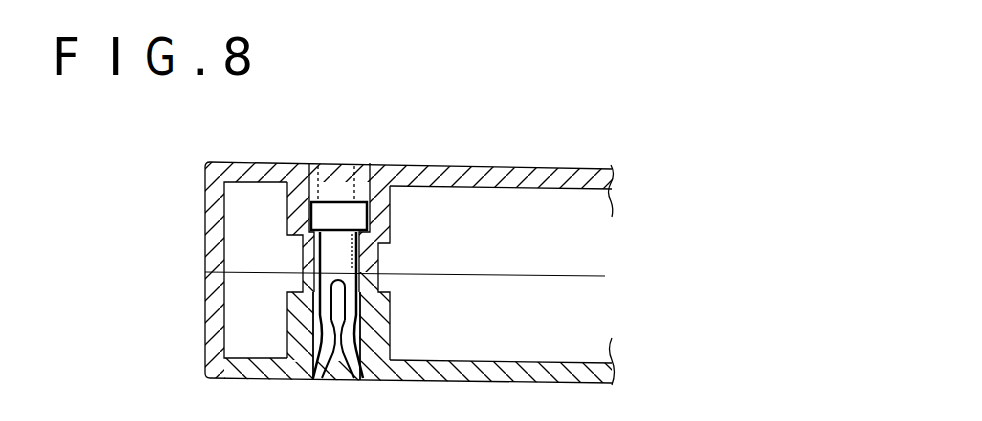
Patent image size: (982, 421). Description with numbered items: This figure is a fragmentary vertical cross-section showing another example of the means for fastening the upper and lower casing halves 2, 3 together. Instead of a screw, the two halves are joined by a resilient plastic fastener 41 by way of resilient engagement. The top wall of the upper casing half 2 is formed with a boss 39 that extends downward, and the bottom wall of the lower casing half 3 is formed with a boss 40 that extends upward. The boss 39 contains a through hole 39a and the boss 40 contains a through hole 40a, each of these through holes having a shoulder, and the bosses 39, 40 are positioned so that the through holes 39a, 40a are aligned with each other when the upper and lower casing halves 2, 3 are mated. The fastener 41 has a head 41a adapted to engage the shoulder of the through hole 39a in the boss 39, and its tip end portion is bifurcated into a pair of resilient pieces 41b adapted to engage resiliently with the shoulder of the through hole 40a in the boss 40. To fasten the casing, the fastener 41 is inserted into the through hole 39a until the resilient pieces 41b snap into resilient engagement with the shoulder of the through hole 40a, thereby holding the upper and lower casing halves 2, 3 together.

The upper casing half 2 is at (563, 179).
The lower casing half 3 is at (548, 372).
The boss 39 is at (385, 217).
The through hole 39a is at (328, 178).
The boss 40 is at (382, 318).
The through hole 40a is at (339, 382).
The resilient plastic fastener 41 is at (328, 272).
The head 41a is at (340, 213).
The resilient pieces 41b is at (306, 380).